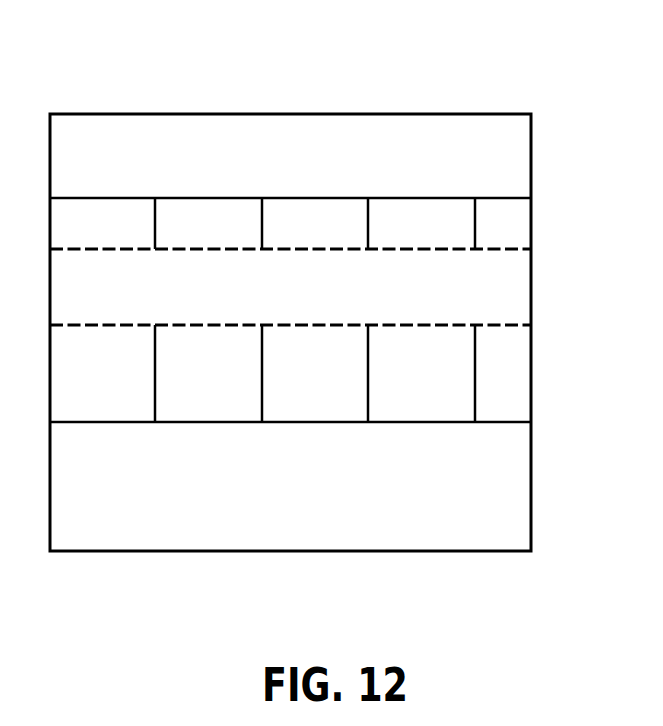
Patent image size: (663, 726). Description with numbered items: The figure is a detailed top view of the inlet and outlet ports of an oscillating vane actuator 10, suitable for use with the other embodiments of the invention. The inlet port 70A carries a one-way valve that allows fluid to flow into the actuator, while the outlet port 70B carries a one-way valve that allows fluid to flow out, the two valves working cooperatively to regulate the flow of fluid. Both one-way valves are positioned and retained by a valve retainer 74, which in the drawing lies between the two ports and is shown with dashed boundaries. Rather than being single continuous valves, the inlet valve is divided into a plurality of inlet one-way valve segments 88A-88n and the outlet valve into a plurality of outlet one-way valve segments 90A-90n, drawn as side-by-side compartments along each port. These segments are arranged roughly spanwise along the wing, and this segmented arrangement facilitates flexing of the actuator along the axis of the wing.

The oscillating vane actuator 10 is at (262, 64).
The inlet port 70A is at (508, 223).
The outlet port 70B is at (455, 388).
The valve retainer 74 is at (482, 295).
The inlet one-way valve segments 88A-88n is at (232, 198).
The outlet one-way valve segments 90A-90n is at (402, 422).